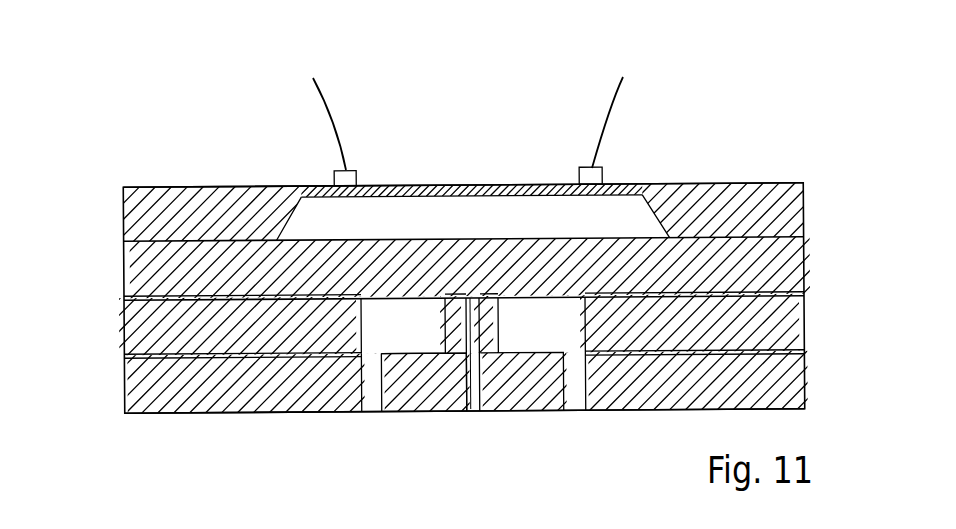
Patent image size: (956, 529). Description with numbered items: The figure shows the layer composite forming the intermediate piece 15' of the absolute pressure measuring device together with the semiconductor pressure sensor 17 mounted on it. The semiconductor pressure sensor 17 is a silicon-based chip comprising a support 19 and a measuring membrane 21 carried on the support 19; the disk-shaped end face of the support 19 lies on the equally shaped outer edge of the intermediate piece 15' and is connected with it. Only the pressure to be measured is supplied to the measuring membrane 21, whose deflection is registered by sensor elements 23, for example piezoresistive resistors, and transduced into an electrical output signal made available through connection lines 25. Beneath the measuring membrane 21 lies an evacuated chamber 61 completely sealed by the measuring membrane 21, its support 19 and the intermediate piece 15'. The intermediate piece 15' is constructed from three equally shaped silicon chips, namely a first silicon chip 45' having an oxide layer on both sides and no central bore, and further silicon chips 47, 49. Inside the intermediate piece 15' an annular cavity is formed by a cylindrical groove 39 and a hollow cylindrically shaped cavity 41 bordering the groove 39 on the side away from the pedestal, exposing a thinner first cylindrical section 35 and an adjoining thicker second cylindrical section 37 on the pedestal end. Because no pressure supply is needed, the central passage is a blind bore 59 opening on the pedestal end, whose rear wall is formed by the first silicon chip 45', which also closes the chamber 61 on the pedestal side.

The intermediate piece 15' is at (463, 247).
The semiconductor pressure sensor 17 is at (189, 174).
The support 19 is at (782, 210).
The measuring membrane 21 is at (471, 193).
The sensor elements 23 is at (337, 178).
The connection lines 25 is at (324, 100).
The first cylindrical section 35 is at (481, 326).
The second cylindrical section 37 is at (432, 392).
The cylindrical groove 39 is at (373, 392).
The hollow cylindrically shaped cavity 41 is at (413, 340).
The first silicon chip 45' is at (478, 297).
The silicon chip 47 is at (775, 313).
The silicon chip 49 is at (778, 378).
The blind bore 59 is at (468, 412).
The evacuated chamber 61 is at (481, 231).